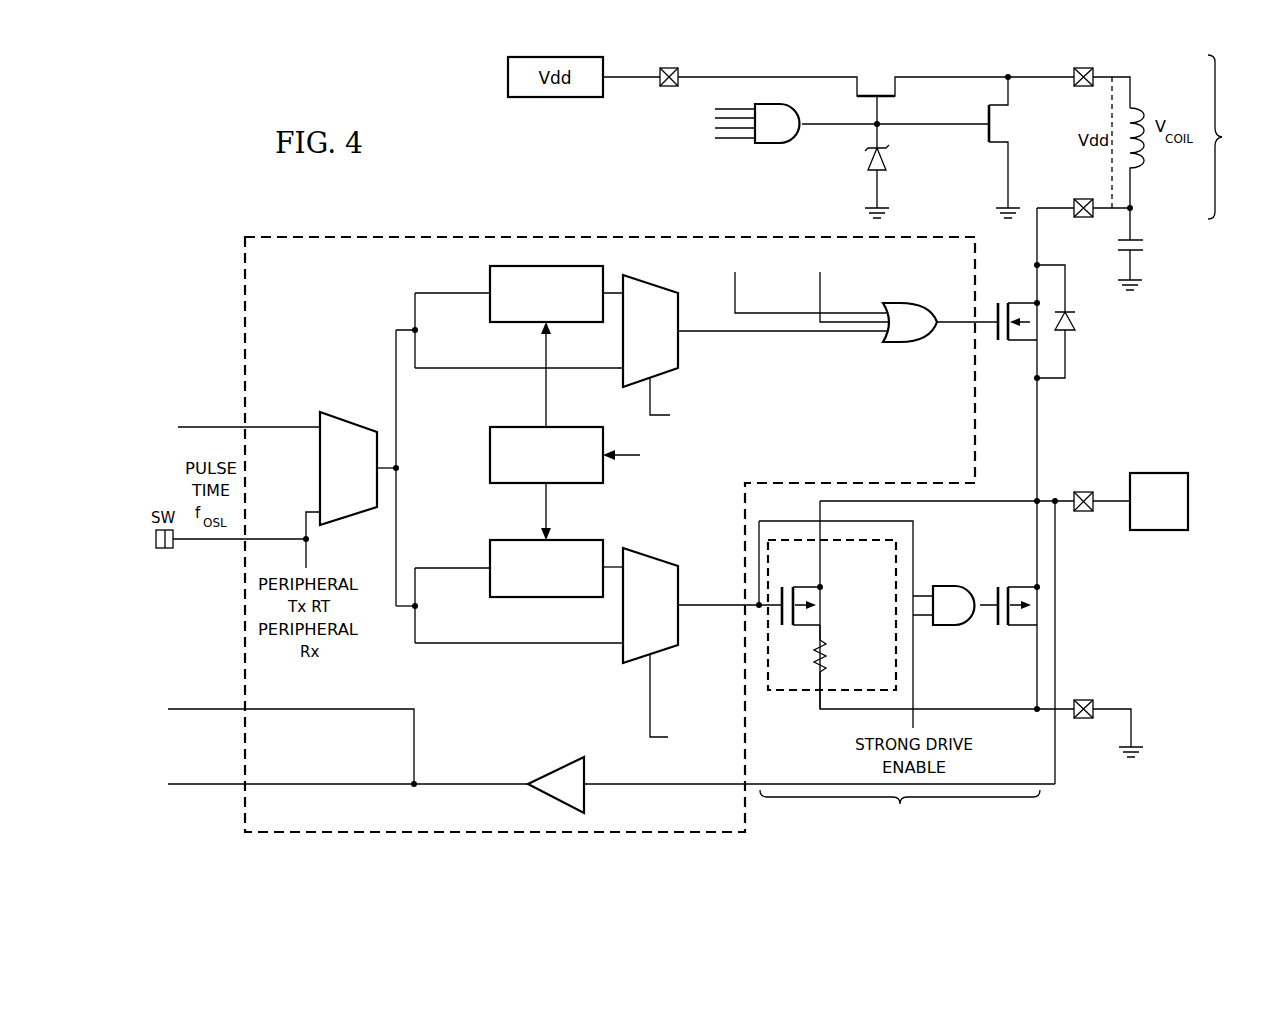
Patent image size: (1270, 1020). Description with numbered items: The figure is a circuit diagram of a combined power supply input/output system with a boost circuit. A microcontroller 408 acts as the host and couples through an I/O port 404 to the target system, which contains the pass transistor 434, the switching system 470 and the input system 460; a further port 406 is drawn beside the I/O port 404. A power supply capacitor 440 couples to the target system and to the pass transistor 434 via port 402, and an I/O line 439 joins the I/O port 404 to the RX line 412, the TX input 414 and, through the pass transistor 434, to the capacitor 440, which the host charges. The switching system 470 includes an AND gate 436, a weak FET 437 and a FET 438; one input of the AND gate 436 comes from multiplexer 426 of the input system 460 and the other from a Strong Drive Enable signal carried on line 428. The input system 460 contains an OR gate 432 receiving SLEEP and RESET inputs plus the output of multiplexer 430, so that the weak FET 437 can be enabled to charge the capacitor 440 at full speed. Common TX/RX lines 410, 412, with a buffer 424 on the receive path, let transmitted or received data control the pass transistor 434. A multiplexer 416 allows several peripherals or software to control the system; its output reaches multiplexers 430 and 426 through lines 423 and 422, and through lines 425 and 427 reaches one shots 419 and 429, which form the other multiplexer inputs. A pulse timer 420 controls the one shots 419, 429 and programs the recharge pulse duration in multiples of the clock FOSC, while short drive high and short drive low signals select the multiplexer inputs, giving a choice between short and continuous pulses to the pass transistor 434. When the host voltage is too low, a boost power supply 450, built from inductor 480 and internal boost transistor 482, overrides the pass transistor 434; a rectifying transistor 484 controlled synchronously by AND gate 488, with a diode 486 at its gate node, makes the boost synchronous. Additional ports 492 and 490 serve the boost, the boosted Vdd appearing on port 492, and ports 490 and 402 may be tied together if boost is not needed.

The port 402 is at (1087, 218).
The I/O port 404 is at (1085, 512).
The Vss pad 406 is at (1085, 719).
The microcontroller 408 is at (1160, 531).
The common TX/RX line 410 is at (207, 785).
The RX line 412 is at (207, 710).
The TX input 414 is at (204, 426).
The multiplexer 416 is at (358, 468).
The one shot 419 is at (487, 288).
The pulse timer 420 is at (487, 448).
The line 422 is at (555, 645).
The line 423 is at (598, 370).
The receive buffer 424 is at (553, 775).
The node 425 is at (413, 318).
The multiplexer 426 is at (702, 659).
The signal line 427 is at (462, 567).
The supply line 428 is at (962, 502).
The one shot 429 is at (488, 580).
The multiplexer 430 is at (676, 363).
The OR gate 432 is at (905, 305).
The pass transistor 434 is at (1078, 333).
The AND gate 436 is at (946, 627).
The weak FET 437 is at (832, 624).
The FET 438 is at (995, 628).
The I/O line 439 is at (1057, 606).
The power supply capacitor 440 is at (1143, 248).
The boost power supply 450 is at (1236, 137).
The input system 460 is at (246, 315).
The switching system 470 is at (900, 812).
The inductor 480 is at (1148, 115).
The internal boost power supply transistor 482 is at (987, 128).
The rectifying transistor 484 is at (882, 100).
The zener diode 486 is at (886, 160).
The AND gate 488 is at (775, 145).
The port 490 is at (1094, 73).
The port 492 is at (671, 87).